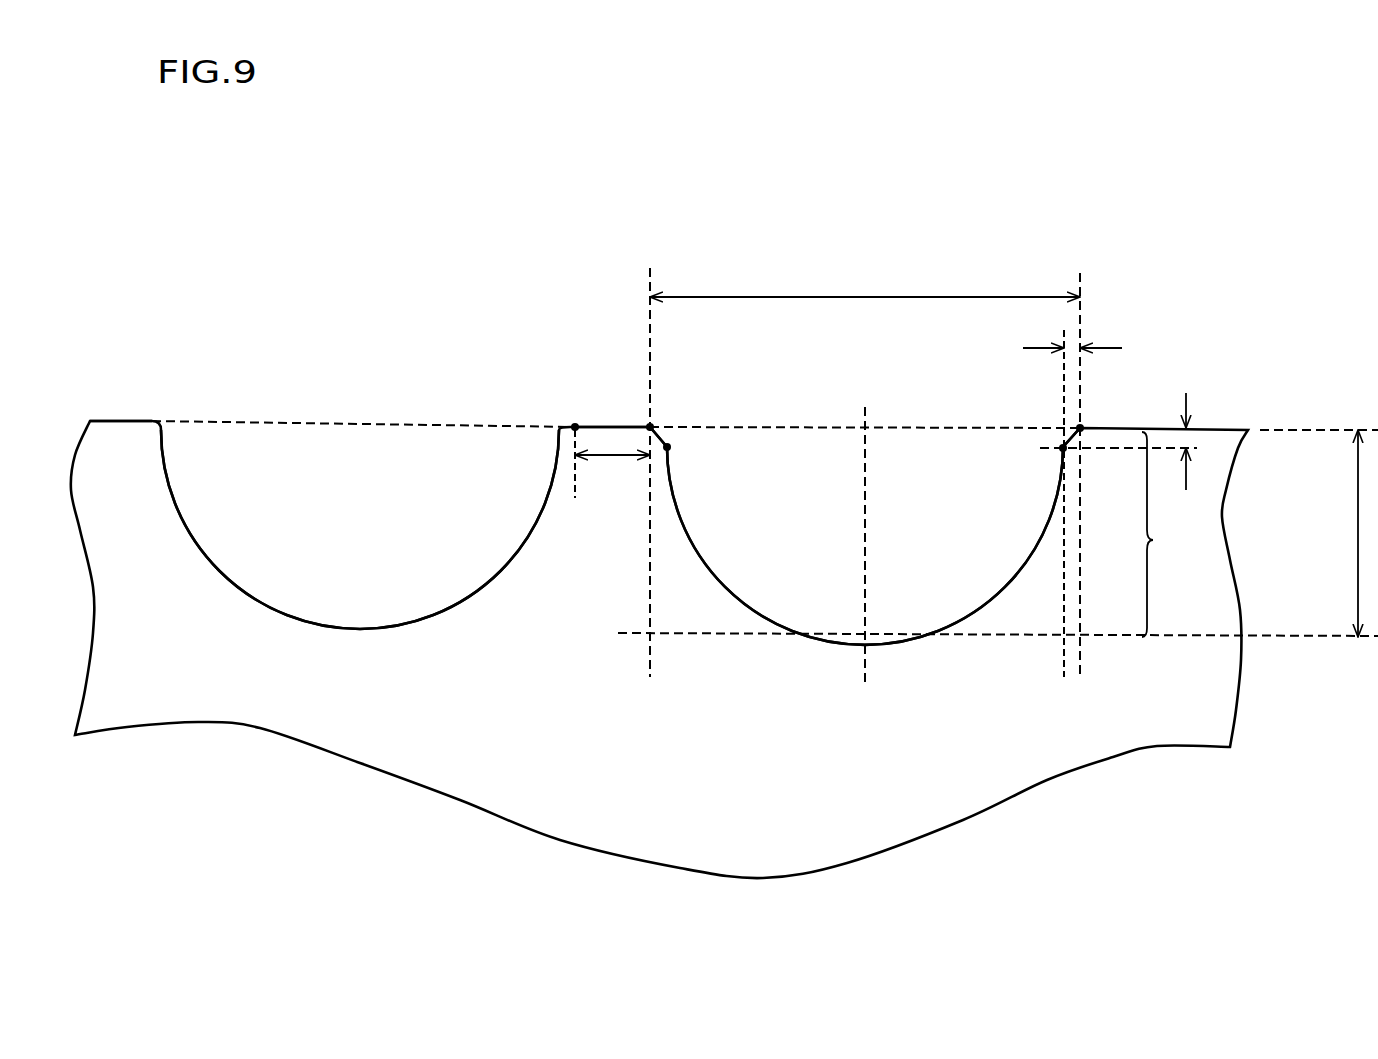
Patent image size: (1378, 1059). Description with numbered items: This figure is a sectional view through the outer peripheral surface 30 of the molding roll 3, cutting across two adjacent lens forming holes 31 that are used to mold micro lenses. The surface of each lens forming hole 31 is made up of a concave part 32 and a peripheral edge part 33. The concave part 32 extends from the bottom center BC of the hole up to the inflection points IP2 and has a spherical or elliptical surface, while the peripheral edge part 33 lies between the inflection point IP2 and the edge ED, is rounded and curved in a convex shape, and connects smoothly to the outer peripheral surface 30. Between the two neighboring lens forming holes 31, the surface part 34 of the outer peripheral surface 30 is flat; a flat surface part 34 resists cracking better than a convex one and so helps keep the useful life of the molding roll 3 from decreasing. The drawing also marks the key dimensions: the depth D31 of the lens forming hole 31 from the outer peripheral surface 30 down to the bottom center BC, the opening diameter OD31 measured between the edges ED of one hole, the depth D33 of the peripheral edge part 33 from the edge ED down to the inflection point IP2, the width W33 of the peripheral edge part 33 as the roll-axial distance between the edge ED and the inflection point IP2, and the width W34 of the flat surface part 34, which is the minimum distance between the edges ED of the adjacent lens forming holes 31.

The molding roll 3 is at (642, 229).
The outer peripheral surface 30 is at (1135, 430).
The lens forming hole 31 is at (366, 411).
The concave part 32 is at (1165, 534).
The peripheral edge part 33 is at (667, 426).
The surface part 34 is at (647, 410).
The edge ED is at (574, 423).
The inflection point IP2 is at (668, 447).
The bottom center BC is at (866, 636).
The opening diameter OD31 is at (865, 469).
The width of the peripheral edge part W33 is at (1072, 348).
The width of the flat part W34 is at (612, 475).
The depth of the peripheral edge part D33 is at (1192, 443).
The depth of the lens forming hole D31 is at (1319, 533).